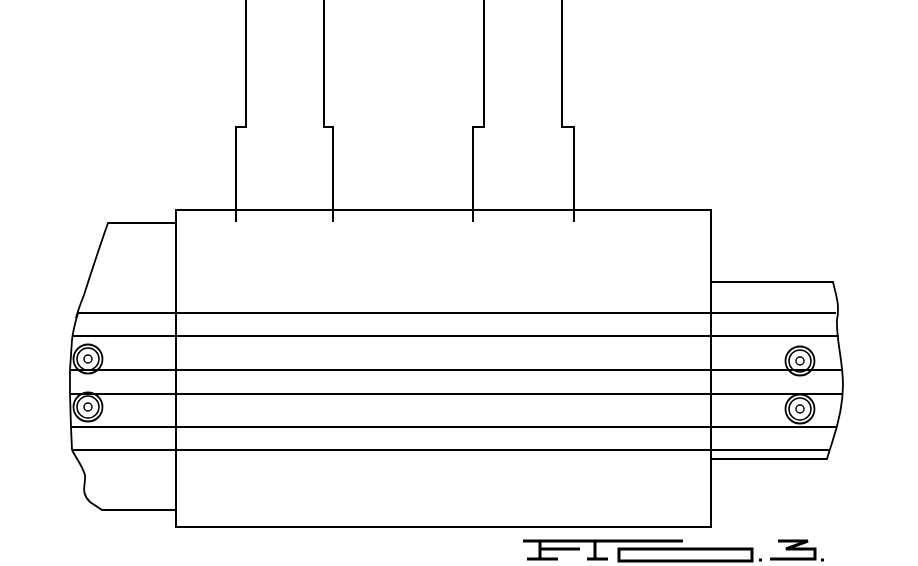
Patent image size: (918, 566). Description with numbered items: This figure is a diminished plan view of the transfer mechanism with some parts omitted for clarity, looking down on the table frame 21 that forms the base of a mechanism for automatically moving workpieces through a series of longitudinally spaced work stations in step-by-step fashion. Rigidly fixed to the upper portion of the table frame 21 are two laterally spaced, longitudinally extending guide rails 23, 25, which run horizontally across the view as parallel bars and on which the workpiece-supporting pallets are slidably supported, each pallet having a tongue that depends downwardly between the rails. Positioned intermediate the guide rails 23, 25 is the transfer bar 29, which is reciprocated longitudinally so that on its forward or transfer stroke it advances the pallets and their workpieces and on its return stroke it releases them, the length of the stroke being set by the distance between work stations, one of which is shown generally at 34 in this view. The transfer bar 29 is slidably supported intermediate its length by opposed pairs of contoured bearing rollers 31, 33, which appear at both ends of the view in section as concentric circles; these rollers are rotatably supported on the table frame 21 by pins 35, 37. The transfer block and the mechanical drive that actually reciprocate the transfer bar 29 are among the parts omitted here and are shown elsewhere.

The table frame 21 is at (135, 210).
The guide rail 23 is at (115, 317).
The guide rail 25 is at (135, 440).
The transfer bar 29 is at (473, 383).
The contoured bearing roller 31 is at (103, 357).
The contoured bearing roller 33 is at (103, 408).
The support posts 34 is at (588, 80).
The pin 35 is at (84, 359).
The pin 37 is at (79, 413).